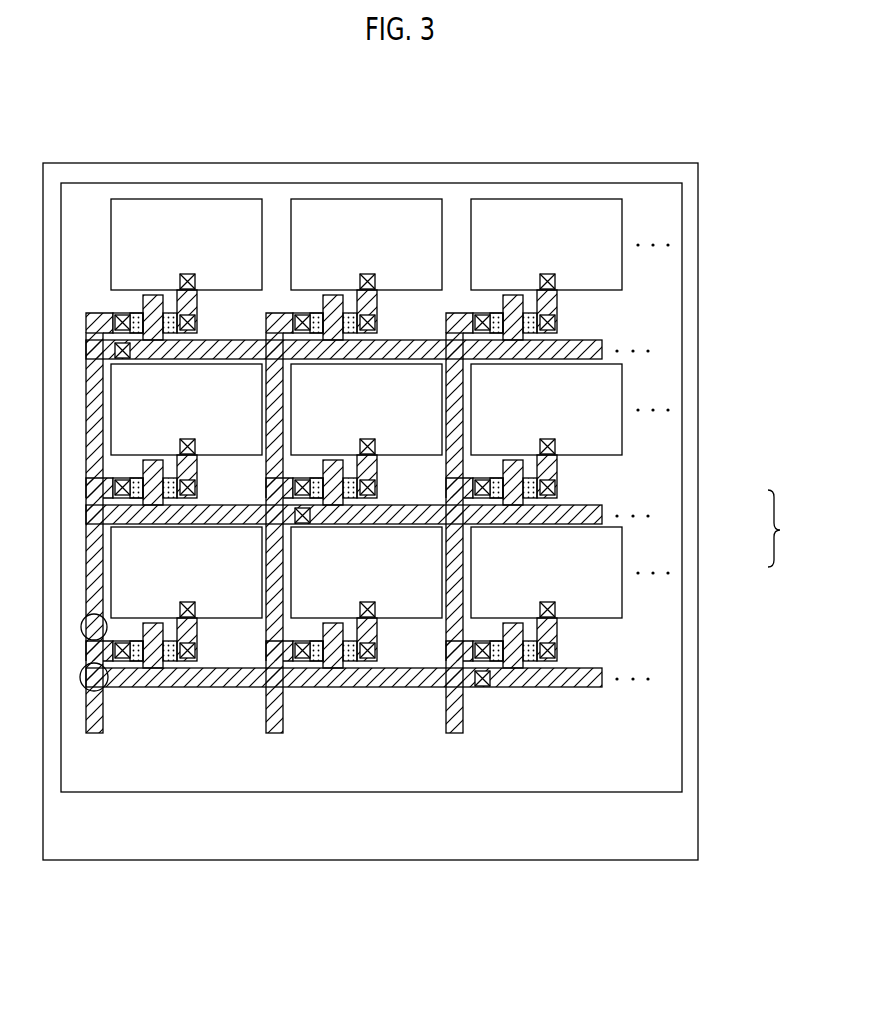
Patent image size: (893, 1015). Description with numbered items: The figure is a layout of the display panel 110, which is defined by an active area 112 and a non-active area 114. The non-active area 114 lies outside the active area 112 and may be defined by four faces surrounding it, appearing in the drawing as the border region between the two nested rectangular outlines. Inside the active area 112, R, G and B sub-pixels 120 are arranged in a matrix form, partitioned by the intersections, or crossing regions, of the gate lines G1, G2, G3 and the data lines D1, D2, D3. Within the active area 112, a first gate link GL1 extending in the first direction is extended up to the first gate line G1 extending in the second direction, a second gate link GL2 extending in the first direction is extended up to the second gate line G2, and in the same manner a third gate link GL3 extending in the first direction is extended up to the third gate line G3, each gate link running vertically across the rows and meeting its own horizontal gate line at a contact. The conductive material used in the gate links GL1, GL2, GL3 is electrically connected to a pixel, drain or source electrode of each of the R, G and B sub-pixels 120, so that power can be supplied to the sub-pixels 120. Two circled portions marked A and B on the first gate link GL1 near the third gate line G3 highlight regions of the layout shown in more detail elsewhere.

The display panel 110 is at (791, 528).
The active area 112 is at (682, 497).
The non-active area 114 is at (698, 550).
The sub-pixels 120 is at (534, 210).
The first data line D1 is at (94, 325).
The second data line D2 is at (274, 325).
The third data line D3 is at (454, 325).
The first gate line G1 is at (596, 342).
The second gate line G2 is at (596, 507).
The third gate line G3 is at (596, 670).
The first gate link GL1 is at (97, 734).
The second gate link GL2 is at (277, 734).
The third gate link GL3 is at (457, 734).
The region A is at (80, 677).
The region B is at (81, 627).